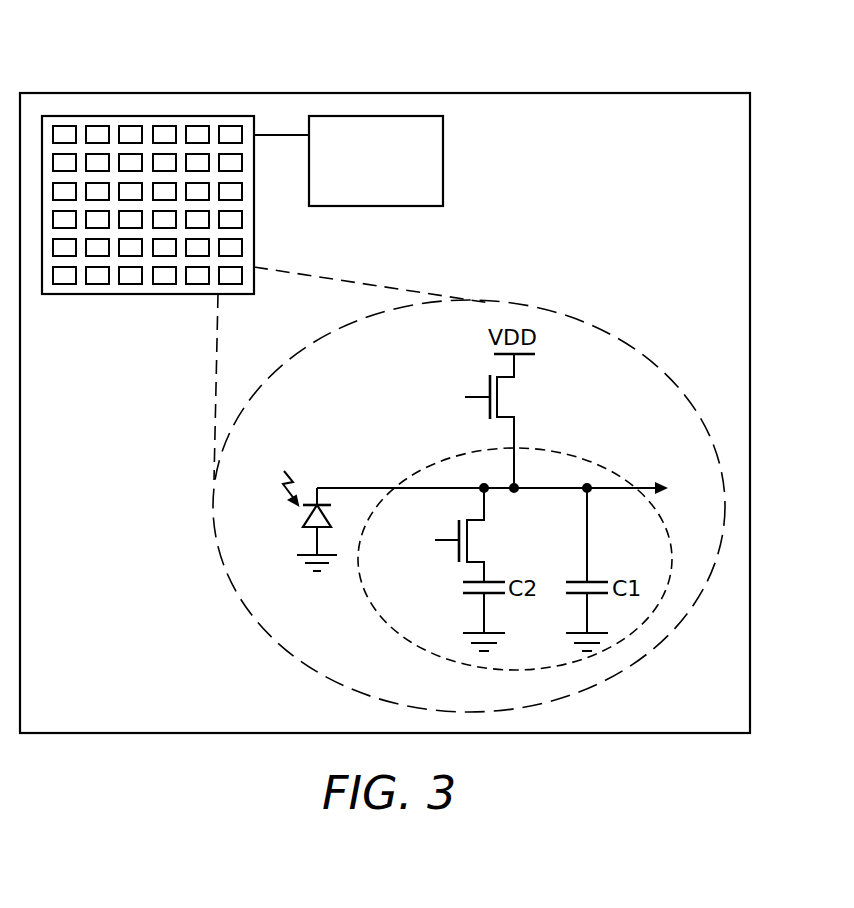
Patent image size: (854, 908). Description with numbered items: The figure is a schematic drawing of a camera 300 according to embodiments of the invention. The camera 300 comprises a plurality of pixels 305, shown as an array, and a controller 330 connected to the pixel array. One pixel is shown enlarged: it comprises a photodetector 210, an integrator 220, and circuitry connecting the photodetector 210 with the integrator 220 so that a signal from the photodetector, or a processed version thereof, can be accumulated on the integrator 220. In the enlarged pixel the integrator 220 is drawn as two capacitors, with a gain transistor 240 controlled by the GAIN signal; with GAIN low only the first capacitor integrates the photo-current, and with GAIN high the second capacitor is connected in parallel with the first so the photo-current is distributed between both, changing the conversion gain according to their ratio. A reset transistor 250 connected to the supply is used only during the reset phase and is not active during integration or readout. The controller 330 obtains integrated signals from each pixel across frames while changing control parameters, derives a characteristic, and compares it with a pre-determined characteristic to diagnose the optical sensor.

The camera 300 is at (77, 72).
The pixels 305 is at (63, 283).
The controller 330 is at (443, 127).
The integrator 220 is at (599, 468).
The photodetector 210 is at (305, 515).
The reset transistor 250 is at (513, 398).
The gain transistor 240 is at (485, 541).